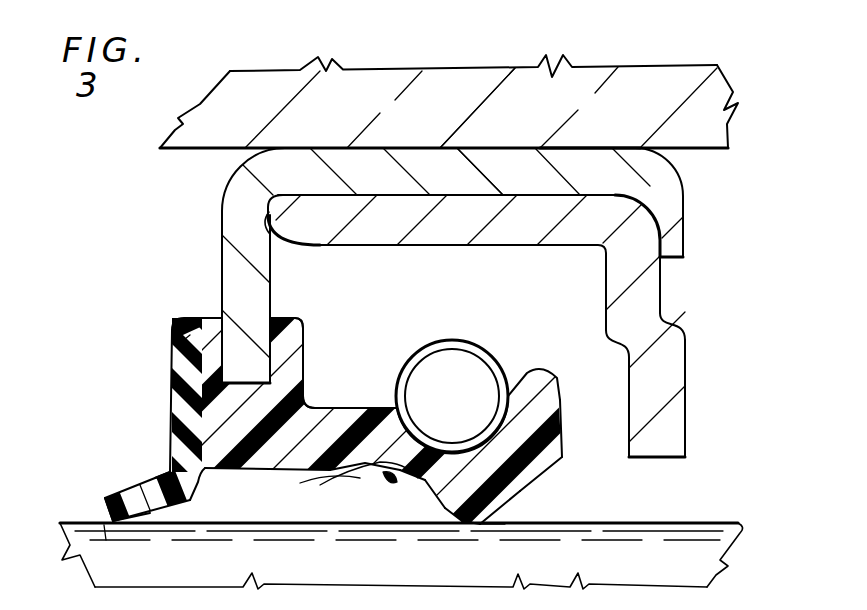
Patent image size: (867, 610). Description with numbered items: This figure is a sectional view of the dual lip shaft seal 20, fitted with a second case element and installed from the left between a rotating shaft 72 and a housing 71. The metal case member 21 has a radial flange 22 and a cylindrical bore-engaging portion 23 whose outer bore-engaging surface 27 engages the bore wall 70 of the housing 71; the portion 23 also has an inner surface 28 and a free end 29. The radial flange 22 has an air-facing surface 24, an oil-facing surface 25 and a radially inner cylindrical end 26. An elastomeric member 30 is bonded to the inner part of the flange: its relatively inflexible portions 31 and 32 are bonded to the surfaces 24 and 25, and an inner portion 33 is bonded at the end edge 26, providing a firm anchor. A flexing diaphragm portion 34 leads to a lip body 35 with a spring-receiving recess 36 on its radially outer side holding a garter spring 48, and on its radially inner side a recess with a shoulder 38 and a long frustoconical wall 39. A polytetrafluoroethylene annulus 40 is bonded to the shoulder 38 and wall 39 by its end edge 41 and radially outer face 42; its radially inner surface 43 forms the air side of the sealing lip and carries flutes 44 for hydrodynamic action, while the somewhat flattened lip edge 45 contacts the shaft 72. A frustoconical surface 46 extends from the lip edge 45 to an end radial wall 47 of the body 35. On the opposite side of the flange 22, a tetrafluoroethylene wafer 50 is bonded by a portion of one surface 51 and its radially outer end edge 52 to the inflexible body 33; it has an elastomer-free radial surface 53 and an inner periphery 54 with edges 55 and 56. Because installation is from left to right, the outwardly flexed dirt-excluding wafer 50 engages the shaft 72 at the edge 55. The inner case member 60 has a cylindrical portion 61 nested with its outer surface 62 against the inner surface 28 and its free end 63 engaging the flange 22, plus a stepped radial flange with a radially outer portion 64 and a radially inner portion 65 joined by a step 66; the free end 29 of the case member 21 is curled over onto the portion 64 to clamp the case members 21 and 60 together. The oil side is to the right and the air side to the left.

The dual lip shaft seal 20 is at (205, 192).
The metal case member 21 is at (210, 219).
The radial flange 22 is at (245, 250).
The cylindrical bore-engaging portion 23 is at (503, 157).
The air-facing surface 24 is at (222, 278).
The oil-facing surface 25 is at (272, 287).
The radially inner cylindrical end 26 is at (228, 383).
The outer bore-engaging surface 27 is at (571, 155).
The inner surface 28 is at (557, 198).
The free end 29 is at (687, 233).
The elastomeric member 30 is at (552, 370).
The inflexible elastomeric portion 31 is at (184, 330).
The inflexible elastomeric portion 32 is at (298, 330).
The inner elastomeric portion 33 is at (264, 458).
The flexing diaphragm portion 34 is at (327, 411).
The lip body 35 is at (389, 416).
The spring-receiving recess 36 is at (417, 440).
The shoulder 38 is at (316, 488).
The long frustoconical wall 39 is at (480, 525).
The polytetrafluoroethylene annulus 40 is at (407, 493).
The end edge 41 is at (320, 485).
The radially outer face 42 is at (493, 513).
The radially inner surface 43 is at (447, 520).
The flutes 44 is at (420, 520).
The lip edge 45 is at (510, 518).
The frustoconical surface 46 is at (538, 486).
The end radial wall 47 is at (563, 437).
The garter spring 48 is at (485, 352).
The tetrafluoroethylene wafer 50 is at (193, 490).
The wafer surface 51 is at (200, 472).
The radially outer end edge 52 is at (180, 343).
The elastomer-free radial surface 53 is at (152, 483).
The inner periphery 54 is at (105, 510).
The edge 55 is at (104, 525).
The edge 56 is at (108, 496).
The inner case member 60 is at (596, 267).
The cylindrical portion 61 is at (500, 200).
The outer surface 62 is at (473, 192).
The free end 63 is at (270, 233).
The radially outer flange portion 64 is at (654, 296).
The radially inner flange portion 65 is at (682, 433).
The step 66 is at (679, 322).
The bore wall 70 is at (196, 152).
The housing 71 is at (430, 97).
The rotating shaft 72 is at (368, 574).